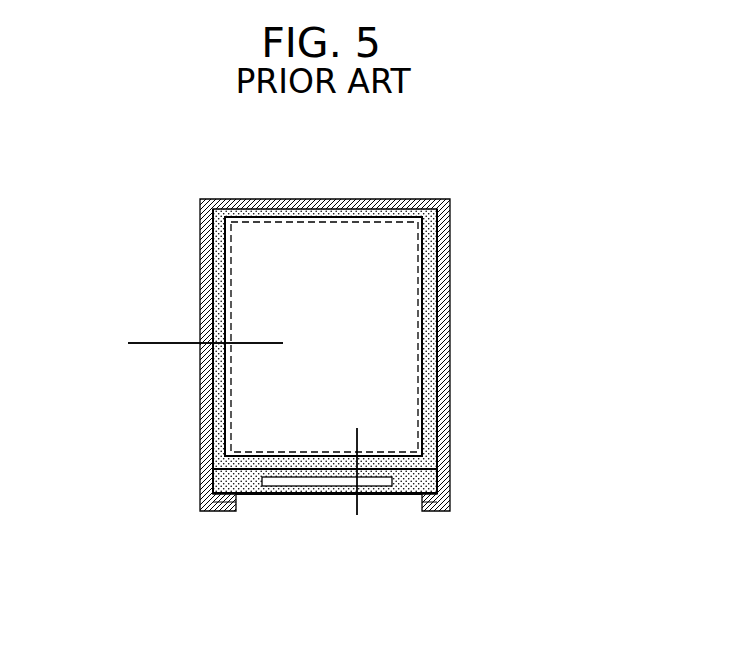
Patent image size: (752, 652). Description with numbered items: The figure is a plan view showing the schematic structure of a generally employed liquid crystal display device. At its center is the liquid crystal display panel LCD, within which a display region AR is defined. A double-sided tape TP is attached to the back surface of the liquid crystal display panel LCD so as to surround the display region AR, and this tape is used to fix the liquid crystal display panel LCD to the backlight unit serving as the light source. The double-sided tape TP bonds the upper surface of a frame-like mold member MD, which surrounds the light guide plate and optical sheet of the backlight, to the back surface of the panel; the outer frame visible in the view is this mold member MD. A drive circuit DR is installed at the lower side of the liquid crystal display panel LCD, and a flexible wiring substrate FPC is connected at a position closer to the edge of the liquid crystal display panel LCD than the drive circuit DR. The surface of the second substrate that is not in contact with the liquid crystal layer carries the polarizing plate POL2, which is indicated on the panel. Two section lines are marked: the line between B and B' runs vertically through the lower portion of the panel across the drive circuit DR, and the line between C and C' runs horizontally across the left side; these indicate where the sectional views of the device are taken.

The mold member MD is at (223, 199).
The double-sided tape TP is at (309, 209).
The liquid crystal display panel LCD is at (400, 214).
The display region AR is at (324, 337).
The polarizing plate POL2 is at (257, 286).
The drive circuit DR is at (304, 486).
The flexible wiring substrate FPC is at (252, 508).
The line C-C' C is at (195, 345).
The line C- C' is at (219, 345).
The line B-B' B is at (356, 460).
The line B- B' is at (362, 485).